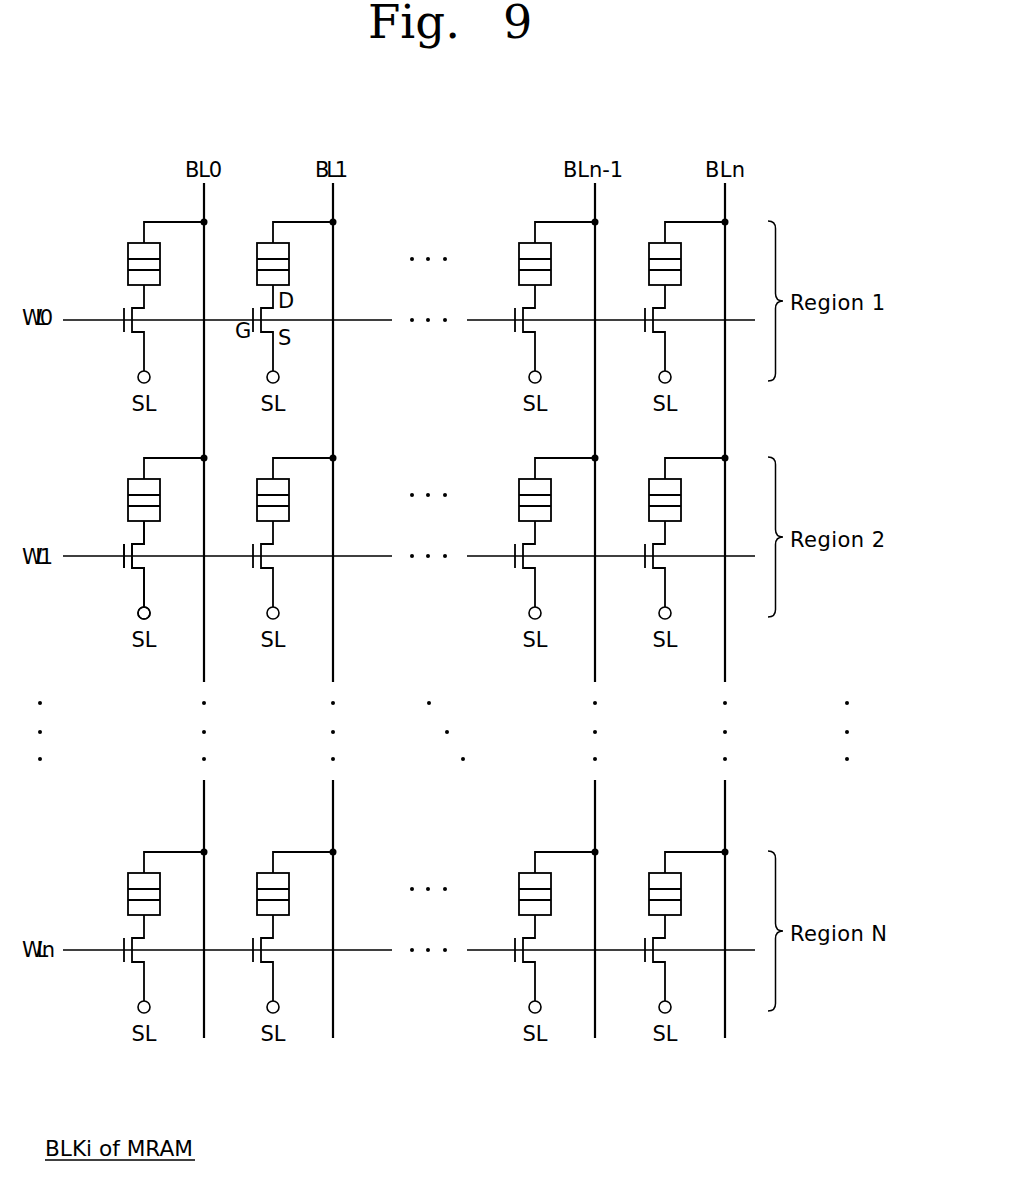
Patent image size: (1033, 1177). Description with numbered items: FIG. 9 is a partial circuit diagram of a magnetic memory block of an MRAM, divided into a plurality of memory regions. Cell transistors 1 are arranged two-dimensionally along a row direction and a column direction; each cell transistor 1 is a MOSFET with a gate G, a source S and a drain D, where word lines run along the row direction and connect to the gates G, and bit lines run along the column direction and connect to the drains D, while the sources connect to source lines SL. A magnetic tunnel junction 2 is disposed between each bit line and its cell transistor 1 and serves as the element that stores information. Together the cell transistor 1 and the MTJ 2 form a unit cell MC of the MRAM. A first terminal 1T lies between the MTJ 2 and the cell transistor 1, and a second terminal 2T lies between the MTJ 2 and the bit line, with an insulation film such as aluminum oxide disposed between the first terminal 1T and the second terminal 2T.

The cell transistor 1 is at (140, 332).
The magnetic tunnel junction (MTJ) 2 is at (128, 262).
The first terminal 1T is at (143, 528).
The second terminal 2T is at (143, 465).
The unit cell MC is at (505, 258).